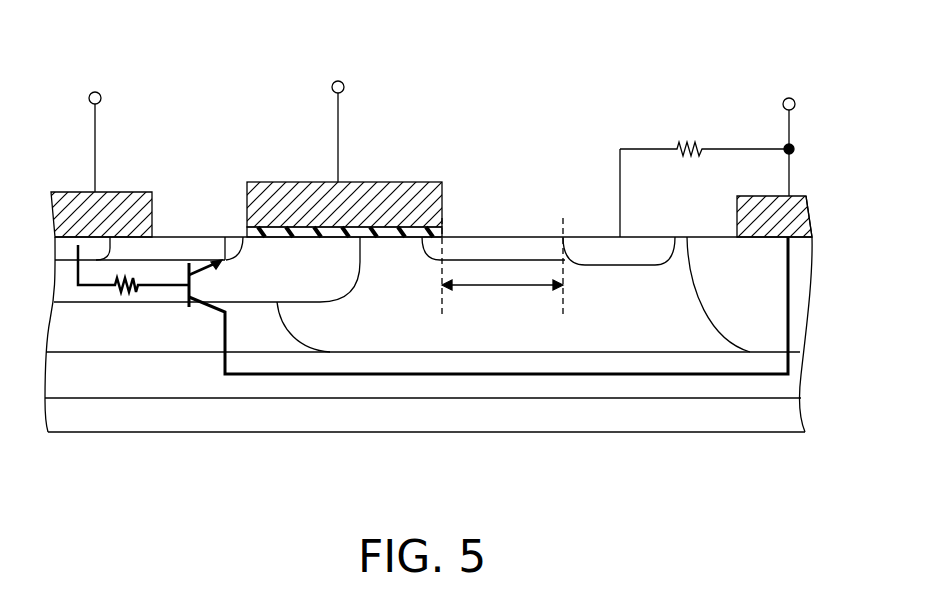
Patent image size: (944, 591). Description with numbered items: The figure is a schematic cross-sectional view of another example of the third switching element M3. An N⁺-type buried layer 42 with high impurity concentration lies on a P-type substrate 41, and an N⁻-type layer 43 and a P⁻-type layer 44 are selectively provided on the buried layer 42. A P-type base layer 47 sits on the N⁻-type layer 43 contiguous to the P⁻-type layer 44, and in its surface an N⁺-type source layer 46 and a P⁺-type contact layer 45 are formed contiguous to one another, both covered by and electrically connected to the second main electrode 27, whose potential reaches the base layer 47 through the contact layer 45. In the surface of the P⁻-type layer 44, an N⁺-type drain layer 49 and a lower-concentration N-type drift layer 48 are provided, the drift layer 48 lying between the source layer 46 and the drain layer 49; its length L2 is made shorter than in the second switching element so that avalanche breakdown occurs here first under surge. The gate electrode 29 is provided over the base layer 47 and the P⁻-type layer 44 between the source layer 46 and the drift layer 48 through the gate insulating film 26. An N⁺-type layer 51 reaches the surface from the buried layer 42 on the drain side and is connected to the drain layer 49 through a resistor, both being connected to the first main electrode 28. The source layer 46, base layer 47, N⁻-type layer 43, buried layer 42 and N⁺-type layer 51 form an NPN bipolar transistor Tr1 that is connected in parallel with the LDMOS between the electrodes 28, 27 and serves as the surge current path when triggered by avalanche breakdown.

The third switching element M3 is at (477, 65).
The second main electrode 27 is at (137, 208).
The P⁺-type contact layer 45 is at (67, 248).
The N⁺-type source layer 46 is at (210, 248).
The P-type base layer 47 is at (258, 250).
The gate electrode 29 is at (385, 195).
The gate insulating film 26 is at (298, 230).
The N-type drift layer 48 is at (470, 247).
The length of the drift layer L2 is at (502, 266).
The N⁺-type drain layer 49 is at (583, 250).
The N⁺-type layer 51 is at (705, 263).
The first main electrode 28 is at (797, 202).
The NPN-type bipolar transistor Tr1 is at (433, 305).
The N⁻-type layer 43 is at (148, 335).
The N⁺-type buried layer 42 is at (500, 385).
The P⁻-type layer 44 is at (628, 337).
The P-type substrate 41 is at (353, 412).